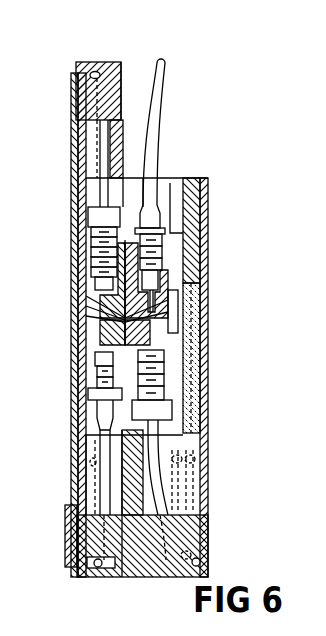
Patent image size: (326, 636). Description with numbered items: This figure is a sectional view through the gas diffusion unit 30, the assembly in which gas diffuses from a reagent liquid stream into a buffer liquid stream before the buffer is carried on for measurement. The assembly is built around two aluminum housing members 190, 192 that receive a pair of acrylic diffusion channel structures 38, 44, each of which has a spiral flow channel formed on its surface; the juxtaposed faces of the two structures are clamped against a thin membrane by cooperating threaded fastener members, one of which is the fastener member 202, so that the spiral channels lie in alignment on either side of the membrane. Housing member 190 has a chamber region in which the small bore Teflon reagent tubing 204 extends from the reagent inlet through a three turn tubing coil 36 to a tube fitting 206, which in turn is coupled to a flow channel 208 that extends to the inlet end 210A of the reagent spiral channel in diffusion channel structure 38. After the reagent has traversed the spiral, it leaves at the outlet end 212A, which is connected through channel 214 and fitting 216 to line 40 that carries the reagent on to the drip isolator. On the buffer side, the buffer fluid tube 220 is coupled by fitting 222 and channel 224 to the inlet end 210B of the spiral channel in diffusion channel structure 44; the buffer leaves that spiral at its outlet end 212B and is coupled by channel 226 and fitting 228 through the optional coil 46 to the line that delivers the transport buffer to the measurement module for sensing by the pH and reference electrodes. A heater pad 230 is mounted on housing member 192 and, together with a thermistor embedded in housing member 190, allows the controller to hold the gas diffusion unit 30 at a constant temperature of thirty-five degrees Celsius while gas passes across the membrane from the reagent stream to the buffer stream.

The gas diffusion unit 30 is at (72, 67).
The tubing coil 36 is at (201, 460).
The diffusion channel structure 38 is at (150, 290).
The line 40 is at (160, 165).
The diffusion channel structure 44 is at (97, 303).
The optional coil 46 is at (83, 88).
The housing member 190 is at (202, 176).
The housing member 192 is at (122, 82).
The threaded fastener member 202 is at (176, 330).
The reagent tubing 204 is at (157, 480).
The tube fitting 206 is at (163, 408).
The flow channel 208 is at (192, 360).
The inlet end 210A is at (135, 320).
The inlet end 210B is at (105, 330).
The outlet end 212A is at (130, 300).
The outlet end 212B is at (100, 320).
The channel 214 is at (165, 310).
The fitting 216 is at (165, 240).
The buffer fluid tube 220 is at (107, 473).
The fitting 222 is at (100, 393).
The channel 224 is at (100, 340).
The channel 226 is at (103, 293).
The fitting 228 is at (97, 220).
The heater pad 230 is at (70, 148).